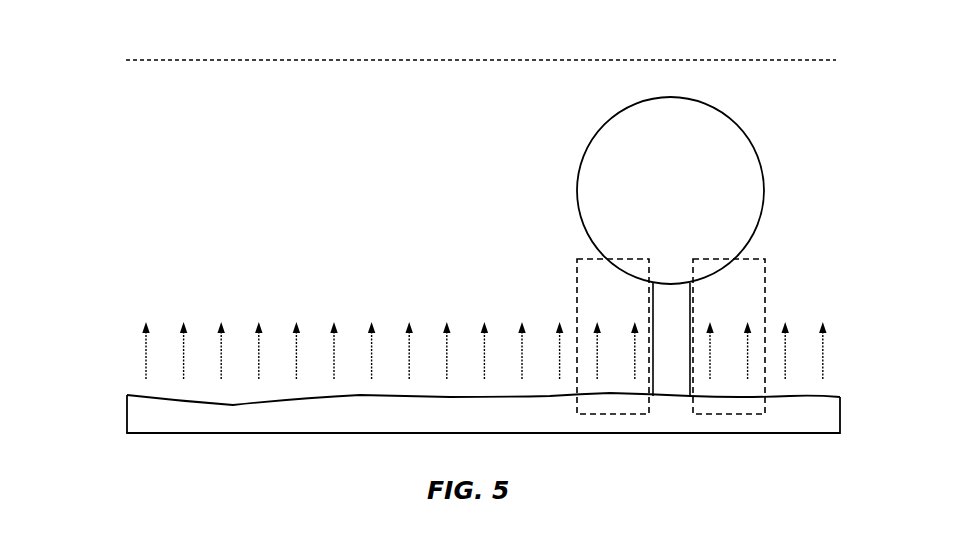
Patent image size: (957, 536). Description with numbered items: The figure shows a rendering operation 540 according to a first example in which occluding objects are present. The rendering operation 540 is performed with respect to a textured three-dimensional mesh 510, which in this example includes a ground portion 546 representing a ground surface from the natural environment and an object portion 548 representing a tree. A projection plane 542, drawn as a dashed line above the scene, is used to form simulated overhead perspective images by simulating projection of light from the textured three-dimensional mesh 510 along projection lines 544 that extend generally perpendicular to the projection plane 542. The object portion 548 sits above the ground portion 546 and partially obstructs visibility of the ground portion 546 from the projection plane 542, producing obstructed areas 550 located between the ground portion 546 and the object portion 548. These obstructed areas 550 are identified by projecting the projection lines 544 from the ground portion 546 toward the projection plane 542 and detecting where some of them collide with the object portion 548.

The rendering operation 540 is at (92, 61).
The projection plane 542 is at (803, 60).
The projection lines 544 is at (128, 323).
The ground portion 546 is at (821, 396).
The object portion 548 is at (752, 183).
The obstructed areas 550 is at (587, 275).
The textured three-dimensional mesh 510 is at (118, 429).